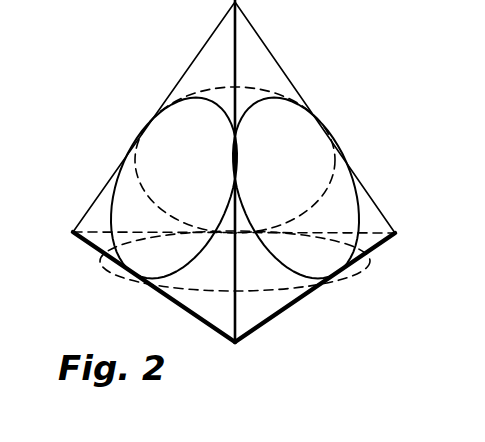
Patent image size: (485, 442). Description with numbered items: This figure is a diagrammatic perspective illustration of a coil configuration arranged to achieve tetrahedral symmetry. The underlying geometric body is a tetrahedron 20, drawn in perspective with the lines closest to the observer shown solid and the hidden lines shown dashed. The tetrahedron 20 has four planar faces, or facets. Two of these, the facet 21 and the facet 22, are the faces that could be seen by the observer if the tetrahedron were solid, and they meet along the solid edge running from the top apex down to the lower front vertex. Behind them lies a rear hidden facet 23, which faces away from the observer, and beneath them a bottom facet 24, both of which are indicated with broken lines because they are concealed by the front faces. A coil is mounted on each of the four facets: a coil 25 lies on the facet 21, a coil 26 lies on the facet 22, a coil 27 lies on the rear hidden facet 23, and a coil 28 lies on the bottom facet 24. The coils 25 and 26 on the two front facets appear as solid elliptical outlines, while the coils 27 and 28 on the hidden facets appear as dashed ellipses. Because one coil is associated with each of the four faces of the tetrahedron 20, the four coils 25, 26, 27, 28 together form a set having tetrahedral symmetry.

The tetrahedron 20 is at (284, 71).
The facet 21 is at (366, 216).
The facet 22 is at (106, 207).
The rear hidden facet 23 is at (250, 55).
The bottom facet 24 is at (255, 305).
The coil 25 is at (352, 186).
The coil 26 is at (118, 250).
The coil 27 is at (230, 87).
The coil 28 is at (203, 292).